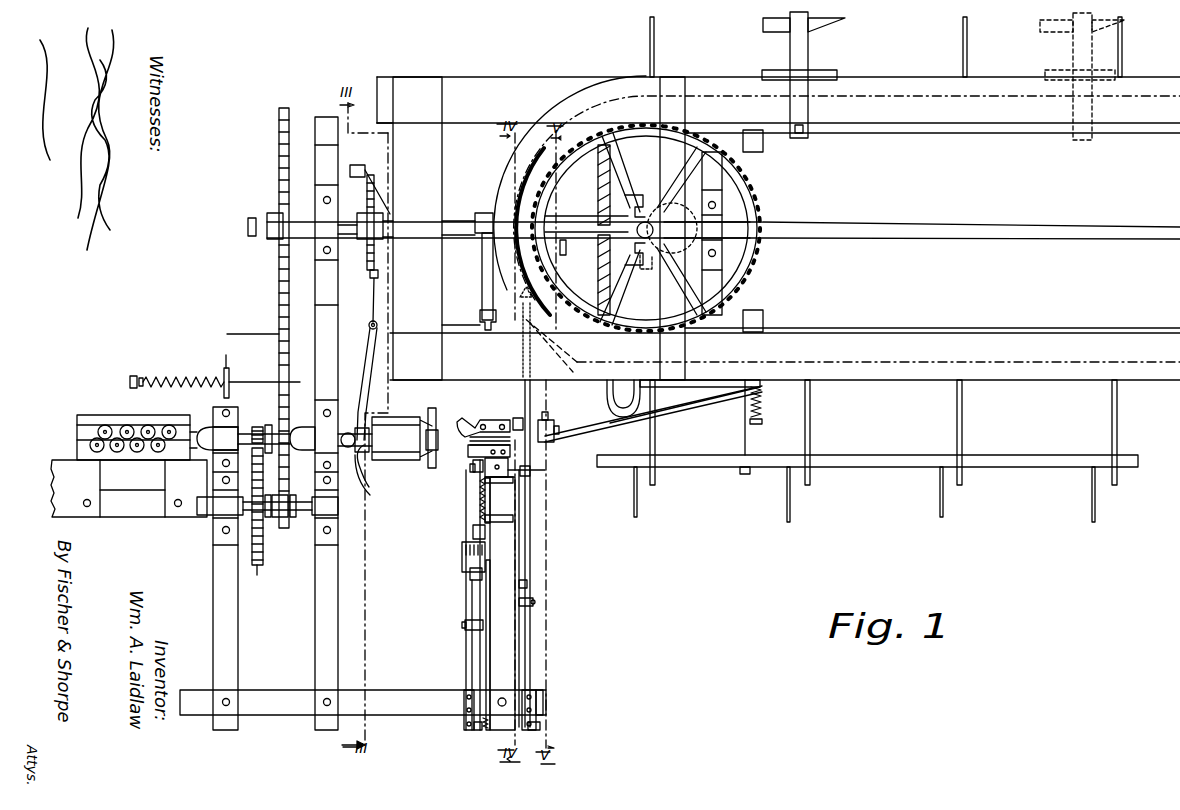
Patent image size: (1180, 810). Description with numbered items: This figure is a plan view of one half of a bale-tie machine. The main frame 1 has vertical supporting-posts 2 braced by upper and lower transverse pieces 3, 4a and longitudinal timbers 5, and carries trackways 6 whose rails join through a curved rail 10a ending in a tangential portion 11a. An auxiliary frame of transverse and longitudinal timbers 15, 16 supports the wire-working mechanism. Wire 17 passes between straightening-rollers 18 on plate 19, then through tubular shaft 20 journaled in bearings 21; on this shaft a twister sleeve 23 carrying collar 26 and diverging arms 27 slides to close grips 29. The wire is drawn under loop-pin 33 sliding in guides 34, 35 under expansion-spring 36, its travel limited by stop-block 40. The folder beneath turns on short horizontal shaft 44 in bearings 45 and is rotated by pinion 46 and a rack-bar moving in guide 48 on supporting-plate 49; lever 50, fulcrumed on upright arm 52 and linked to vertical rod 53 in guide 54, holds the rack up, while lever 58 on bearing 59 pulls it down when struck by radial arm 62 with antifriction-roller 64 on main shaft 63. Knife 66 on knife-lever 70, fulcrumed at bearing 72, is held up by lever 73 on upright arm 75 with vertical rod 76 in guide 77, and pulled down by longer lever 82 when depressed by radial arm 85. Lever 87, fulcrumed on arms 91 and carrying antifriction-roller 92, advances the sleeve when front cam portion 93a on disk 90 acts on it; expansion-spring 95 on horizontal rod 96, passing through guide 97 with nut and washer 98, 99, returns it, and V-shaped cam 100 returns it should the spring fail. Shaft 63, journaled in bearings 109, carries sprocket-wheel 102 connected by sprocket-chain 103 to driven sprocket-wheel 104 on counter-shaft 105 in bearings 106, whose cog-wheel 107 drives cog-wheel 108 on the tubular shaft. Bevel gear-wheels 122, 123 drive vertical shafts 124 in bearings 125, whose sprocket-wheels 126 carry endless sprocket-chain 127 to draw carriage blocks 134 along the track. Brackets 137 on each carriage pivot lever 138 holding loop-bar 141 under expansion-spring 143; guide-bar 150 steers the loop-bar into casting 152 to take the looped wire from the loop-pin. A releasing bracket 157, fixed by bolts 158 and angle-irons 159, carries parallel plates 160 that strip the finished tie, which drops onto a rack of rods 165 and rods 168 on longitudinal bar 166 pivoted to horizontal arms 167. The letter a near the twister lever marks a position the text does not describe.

The main frame 1 is at (281, 439).
The vertical supporting-posts 2 is at (760, 147).
The upper transverse piece 3 is at (539, 228).
The lower transverse piece 4a is at (712, 233).
The longitudinal timbers 5 is at (926, 133).
The trackways 6 is at (778, 224).
The curved rail 10a is at (504, 180).
The tangential portion 11a is at (560, 354).
The transverse timbers 15 is at (364, 423).
The longitudinal timbers 16 is at (361, 702).
The wire 17 is at (92, 435).
The straightening-rollers 18 is at (107, 423).
The plate 19 is at (125, 462).
The tubular shaft 20 is at (297, 432).
The bearings 21 is at (214, 420).
The sleeve 23 is at (369, 470).
The collar 26 is at (378, 485).
The diverging arms 27 is at (412, 418).
The grips 29 is at (432, 408).
The loop-pin 33 is at (475, 464).
The guide 34 is at (468, 452).
The guide 35 is at (513, 482).
The expansion-spring 36 is at (480, 500).
The stop-block 40 is at (541, 472).
The short horizontal shaft 44 is at (485, 512).
The bearings 45 is at (473, 532).
The pinion 46 is at (470, 575).
The guide 48 is at (462, 552).
The supporting-plate 49 is at (490, 568).
The lever 50 is at (466, 657).
The upright arm 52 is at (465, 622).
The vertical rod 53 is at (464, 727).
The guide 54 is at (477, 731).
The lever 58 is at (480, 677).
The bearing 59 is at (485, 730).
The radial arm 62 is at (482, 283).
The main shaft 63 is at (980, 219).
The antifriction-roller 64 is at (484, 330).
The knife 66 is at (517, 424).
The knife-lever 70 is at (530, 473).
The bearing 72 is at (527, 586).
The lever 73 is at (530, 642).
The upright arm 75 is at (533, 604).
The vertical rod 76 is at (536, 720).
The guide 77 is at (546, 730).
The longer lever 82 is at (551, 553).
The radial arm 85 is at (548, 268).
The lever 87 is at (366, 360).
The gear 90 is at (369, 260).
The arms 91 is at (369, 325).
The antifriction-roller 92 is at (372, 285).
The front portion of cam 93a is at (383, 214).
The expansion-spring 95 is at (183, 377).
The horizontal rod 96 is at (250, 382).
The guide 97 is at (218, 369).
The nut 98 is at (134, 376).
The washer 99 is at (142, 377).
The V-shaped cam 100 is at (357, 165).
The sprocket-wheel 102 is at (284, 108).
The sprocket-chain 103 is at (253, 333).
The driven sprocket-wheel 104 is at (280, 530).
The counter-shaft 105 is at (286, 517).
The bearings 106 is at (343, 530).
The cog-wheel 107 is at (263, 579).
The cog-wheel 108 is at (257, 427).
The bearings 109 is at (317, 228).
The bevel gear-wheels 122 is at (598, 192).
The bevel gear-wheels 123 is at (598, 250).
The vertical shafts 124 is at (645, 270).
The bearings 125 is at (652, 190).
The sprocket-wheels 126 is at (758, 183).
The sprocket-chain 127 is at (582, 130).
The rectangular blocks 134 is at (706, 395).
The brackets 137 is at (624, 398).
The lever 138 is at (600, 424).
The loop-bar 141 is at (554, 443).
The expansion-spring 143 is at (762, 410).
The guide-bar 150 is at (523, 350).
The casting 152 is at (474, 424).
The bracket 157 is at (810, 52).
The bolts 158 is at (800, 135).
The angle-irons 159 is at (837, 74).
The parallel plates 160 is at (776, 30).
The rods 165 is at (656, 43).
The longitudinal bar 166 is at (867, 449).
The horizontal arms 167 is at (744, 436).
The rods 168 is at (869, 506).
The section line a is at (358, 424).